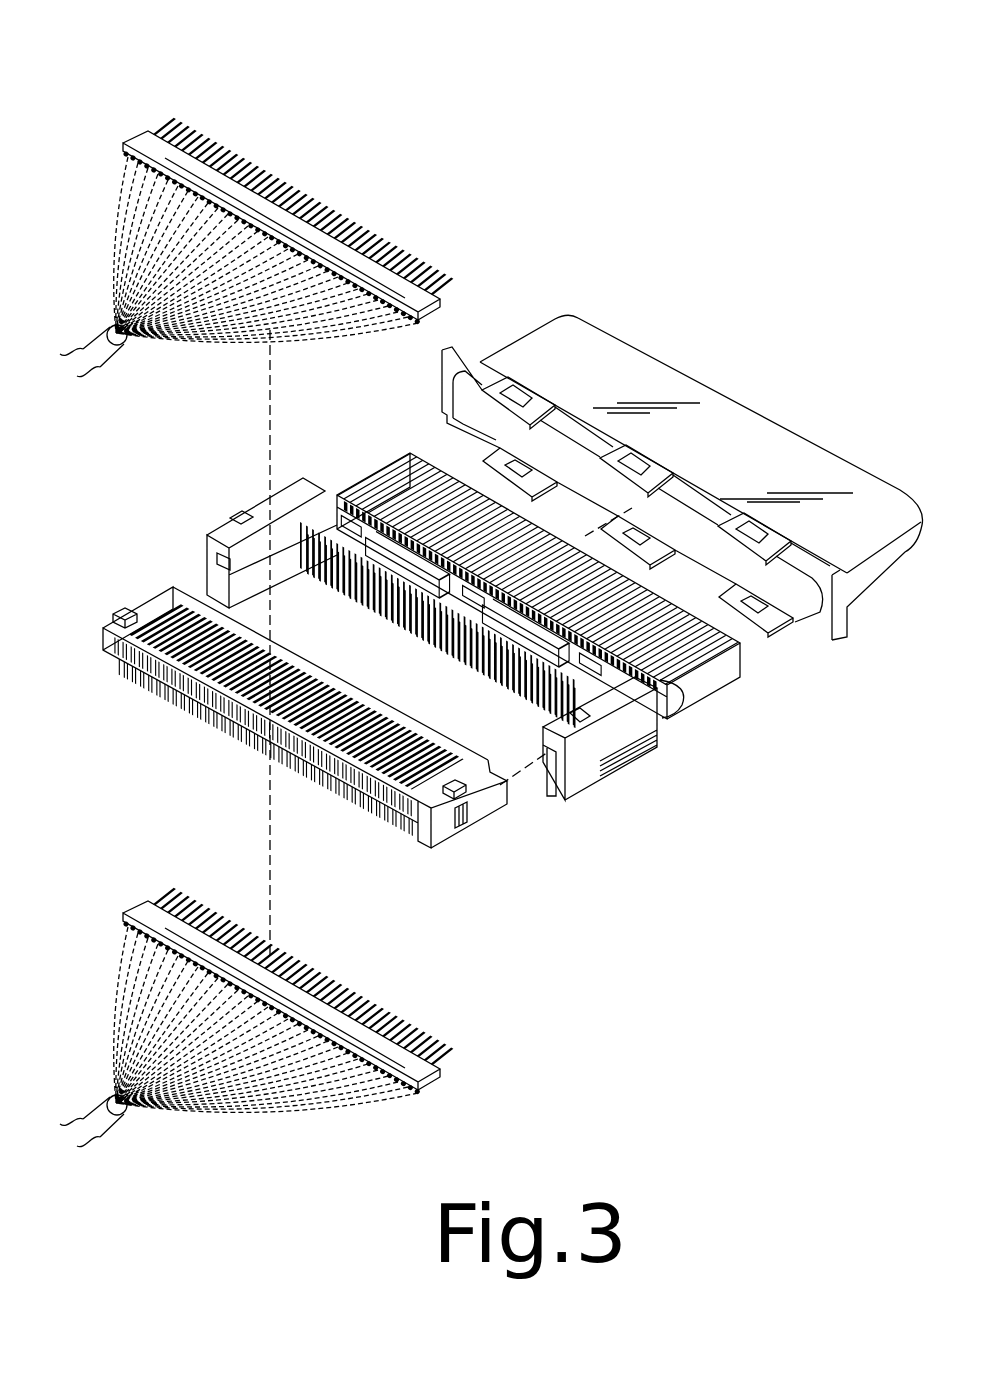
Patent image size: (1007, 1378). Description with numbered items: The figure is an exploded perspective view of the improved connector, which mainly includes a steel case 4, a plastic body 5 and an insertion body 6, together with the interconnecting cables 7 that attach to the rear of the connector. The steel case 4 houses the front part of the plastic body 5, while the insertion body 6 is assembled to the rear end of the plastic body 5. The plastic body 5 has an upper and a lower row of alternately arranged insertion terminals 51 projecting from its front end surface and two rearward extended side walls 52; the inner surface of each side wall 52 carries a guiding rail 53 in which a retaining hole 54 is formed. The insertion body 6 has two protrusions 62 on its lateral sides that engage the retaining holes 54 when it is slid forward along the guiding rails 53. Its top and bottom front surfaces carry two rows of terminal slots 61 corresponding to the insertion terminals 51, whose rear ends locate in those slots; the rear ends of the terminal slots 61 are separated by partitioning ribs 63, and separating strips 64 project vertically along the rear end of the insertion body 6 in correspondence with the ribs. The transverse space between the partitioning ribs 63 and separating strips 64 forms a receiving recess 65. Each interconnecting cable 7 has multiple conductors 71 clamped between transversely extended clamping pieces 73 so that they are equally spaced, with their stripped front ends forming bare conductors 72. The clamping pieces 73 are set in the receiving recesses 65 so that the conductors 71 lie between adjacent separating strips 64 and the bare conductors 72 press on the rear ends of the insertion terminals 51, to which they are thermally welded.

The steel case 4 is at (735, 410).
The plastic body 5 is at (470, 619).
The insertion terminals 51 is at (399, 483).
The side walls 52 is at (622, 754).
The guiding rail 53 is at (217, 567).
The retaining hole 54 is at (251, 557).
The insertion body 6 is at (295, 728).
The terminal slots 61 is at (449, 757).
The protrusions 62 is at (469, 828).
The partitioning ribs 63 is at (365, 738).
The separating strips 64 is at (381, 791).
The receiving recess 65 is at (143, 627).
The interconnecting cables 7 is at (113, 353).
The conductors 71 is at (442, 301).
The bare conductors 72 is at (370, 240).
The clamping pieces 73 is at (143, 143).